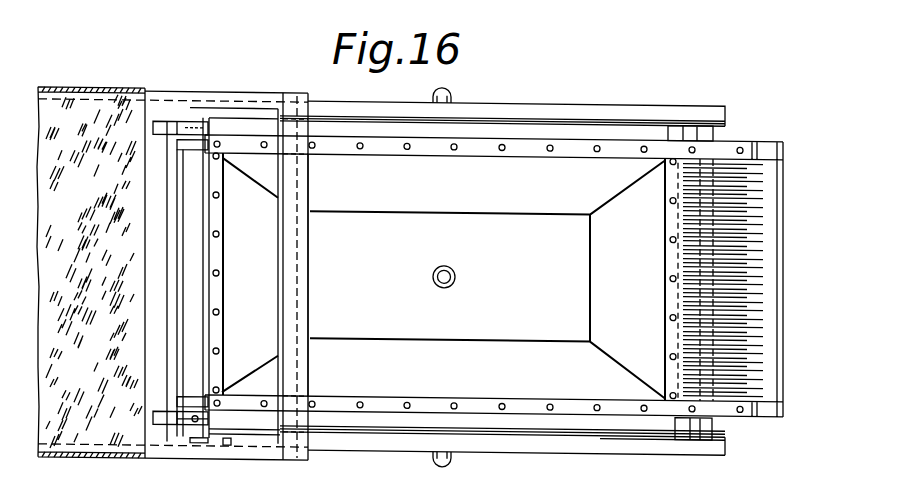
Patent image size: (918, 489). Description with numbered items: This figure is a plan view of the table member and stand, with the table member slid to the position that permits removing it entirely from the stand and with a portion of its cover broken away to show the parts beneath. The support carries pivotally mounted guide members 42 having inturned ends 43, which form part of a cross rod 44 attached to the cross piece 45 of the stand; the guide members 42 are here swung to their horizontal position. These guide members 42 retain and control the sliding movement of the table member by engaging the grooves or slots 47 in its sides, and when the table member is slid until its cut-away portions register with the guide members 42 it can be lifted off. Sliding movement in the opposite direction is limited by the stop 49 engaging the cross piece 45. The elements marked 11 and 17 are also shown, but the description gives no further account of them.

The top bar 11 is at (506, 104).
The bracket 17 is at (130, 422).
The guide member 42 is at (205, 105).
The inturned end 43 is at (232, 110).
The cross rod 44 is at (182, 278).
The cross piece 45 is at (195, 335).
The groove or slot 47 is at (160, 450).
The stop 49 is at (300, 384).